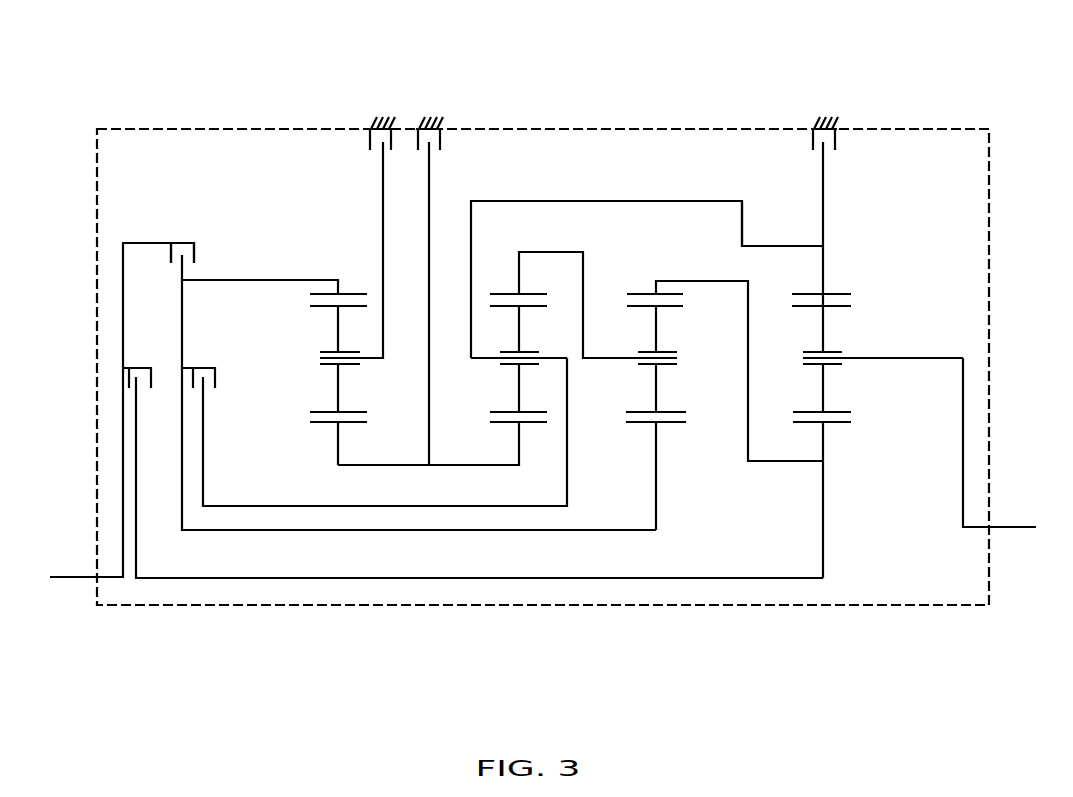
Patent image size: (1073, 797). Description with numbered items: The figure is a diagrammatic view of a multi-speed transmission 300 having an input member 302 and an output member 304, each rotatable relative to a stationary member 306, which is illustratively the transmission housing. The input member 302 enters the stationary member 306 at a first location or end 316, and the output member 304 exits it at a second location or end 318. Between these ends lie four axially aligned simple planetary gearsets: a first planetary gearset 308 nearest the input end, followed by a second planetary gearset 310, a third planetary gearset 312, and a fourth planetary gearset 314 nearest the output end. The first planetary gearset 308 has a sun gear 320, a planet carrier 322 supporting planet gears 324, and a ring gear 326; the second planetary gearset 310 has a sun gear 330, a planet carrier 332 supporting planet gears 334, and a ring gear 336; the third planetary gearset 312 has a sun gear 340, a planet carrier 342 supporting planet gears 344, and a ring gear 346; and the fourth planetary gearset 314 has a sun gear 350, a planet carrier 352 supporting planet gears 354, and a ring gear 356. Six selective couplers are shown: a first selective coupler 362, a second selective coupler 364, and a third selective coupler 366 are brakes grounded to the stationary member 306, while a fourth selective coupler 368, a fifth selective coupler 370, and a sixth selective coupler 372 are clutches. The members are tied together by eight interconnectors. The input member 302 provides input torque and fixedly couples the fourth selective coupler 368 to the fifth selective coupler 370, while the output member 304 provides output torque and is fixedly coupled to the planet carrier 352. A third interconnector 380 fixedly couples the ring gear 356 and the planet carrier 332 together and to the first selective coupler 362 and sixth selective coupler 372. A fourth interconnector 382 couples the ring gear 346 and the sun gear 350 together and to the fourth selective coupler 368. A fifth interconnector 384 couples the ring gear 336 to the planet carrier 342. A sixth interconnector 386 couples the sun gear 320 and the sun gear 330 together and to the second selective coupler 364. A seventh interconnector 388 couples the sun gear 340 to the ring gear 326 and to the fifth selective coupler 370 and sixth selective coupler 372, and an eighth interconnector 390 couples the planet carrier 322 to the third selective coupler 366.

The multi-speed transmission 300 is at (988, 84).
The input member 302 is at (73, 578).
The output member 304 is at (1013, 528).
The stationary member 306 is at (989, 256).
The first planetary gearset 308 is at (319, 624).
The second planetary gearset 310 is at (510, 624).
The third planetary gearset 312 is at (649, 624).
The fourth planetary gearset 314 is at (823, 624).
The first location or end 316 is at (62, 531).
The second location or end 318 is at (1013, 498).
The sun gear 320 is at (316, 428).
The planet carrier 322 is at (316, 343).
The planet gears 324 is at (348, 363).
The ring gear 326 is at (352, 288).
The sun gear 330 is at (542, 437).
The planet carrier 332 is at (532, 340).
The planet gears 334 is at (510, 366).
The ring gear 336 is at (506, 288).
The sun gear 340 is at (670, 438).
The planet carrier 342 is at (675, 345).
The planet gears 344 is at (660, 366).
The ring gear 346 is at (637, 288).
The sun gear 350 is at (840, 438).
The planet carrier 352 is at (847, 338).
The planet gears 354 is at (835, 366).
The ring gear 356 is at (836, 268).
The first selective coupler 362 is at (830, 106).
The second selective coupler 364 is at (434, 106).
The third selective coupler 366 is at (391, 106).
The fourth selective coupler 368 is at (137, 358).
The fifth selective coupler 370 is at (181, 236).
The sixth selective coupler 372 is at (203, 358).
The third interconnector 380 is at (686, 199).
The fourth interconnector 382 is at (697, 280).
The fifth interconnector 384 is at (556, 250).
The sixth interconnector 386 is at (480, 467).
The seventh interconnector 388 is at (657, 531).
The eighth interconnector 390 is at (383, 185).